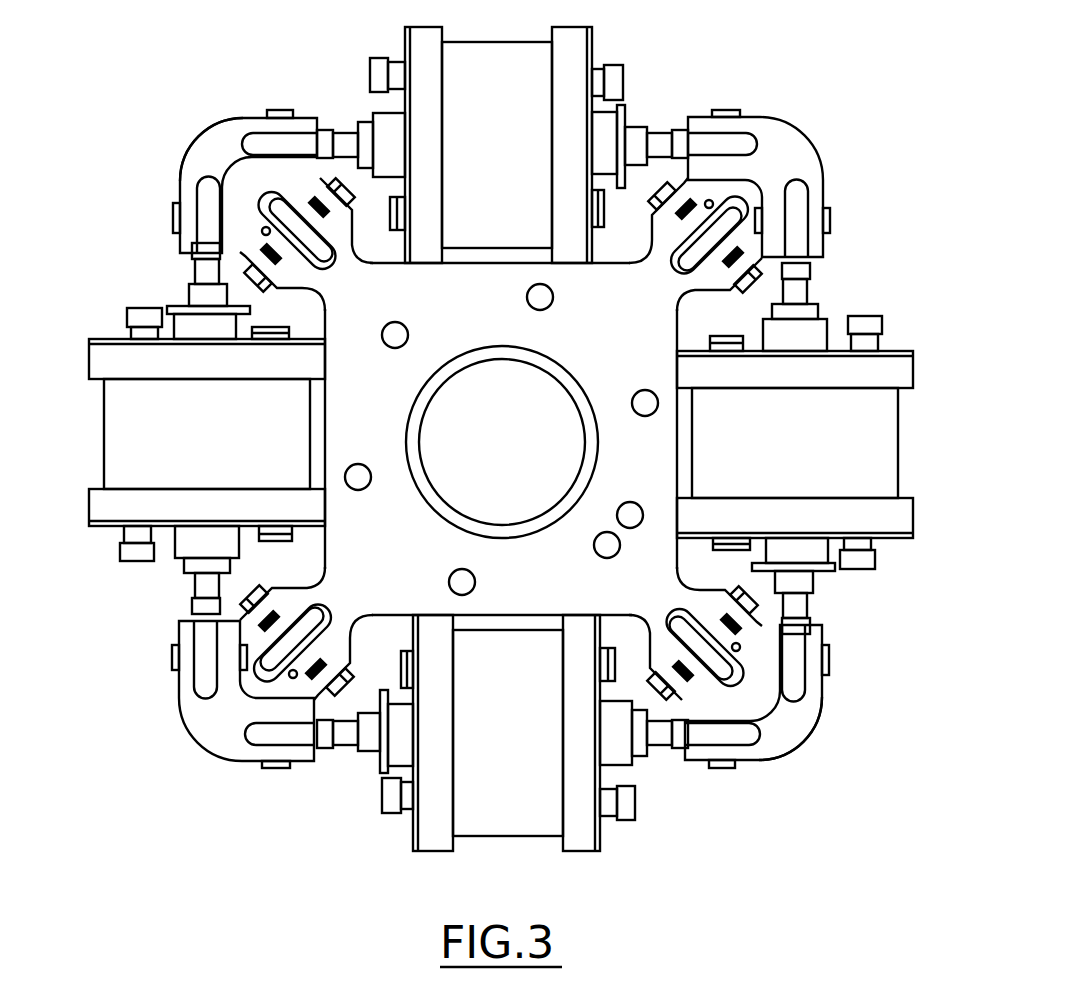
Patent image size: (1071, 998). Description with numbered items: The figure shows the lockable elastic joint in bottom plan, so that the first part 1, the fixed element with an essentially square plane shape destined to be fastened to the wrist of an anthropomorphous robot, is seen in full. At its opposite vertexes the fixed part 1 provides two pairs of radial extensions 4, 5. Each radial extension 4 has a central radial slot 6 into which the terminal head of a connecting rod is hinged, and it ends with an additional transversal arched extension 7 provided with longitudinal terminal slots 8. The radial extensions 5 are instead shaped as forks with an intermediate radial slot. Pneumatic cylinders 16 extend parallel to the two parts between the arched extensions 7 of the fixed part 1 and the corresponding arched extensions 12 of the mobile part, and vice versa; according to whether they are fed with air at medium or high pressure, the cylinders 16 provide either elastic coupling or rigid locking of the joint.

The first part 1 is at (472, 262).
The radial extension 4 is at (245, 180).
The radial extension 5 is at (680, 283).
The central radial slot 6 is at (680, 625).
The transversal arched extension 7 is at (200, 160).
The longitudinal terminal slot 8 is at (272, 116).
The transversal arched extension 12 is at (790, 148).
The pneumatic cylinder 16 is at (463, 62).